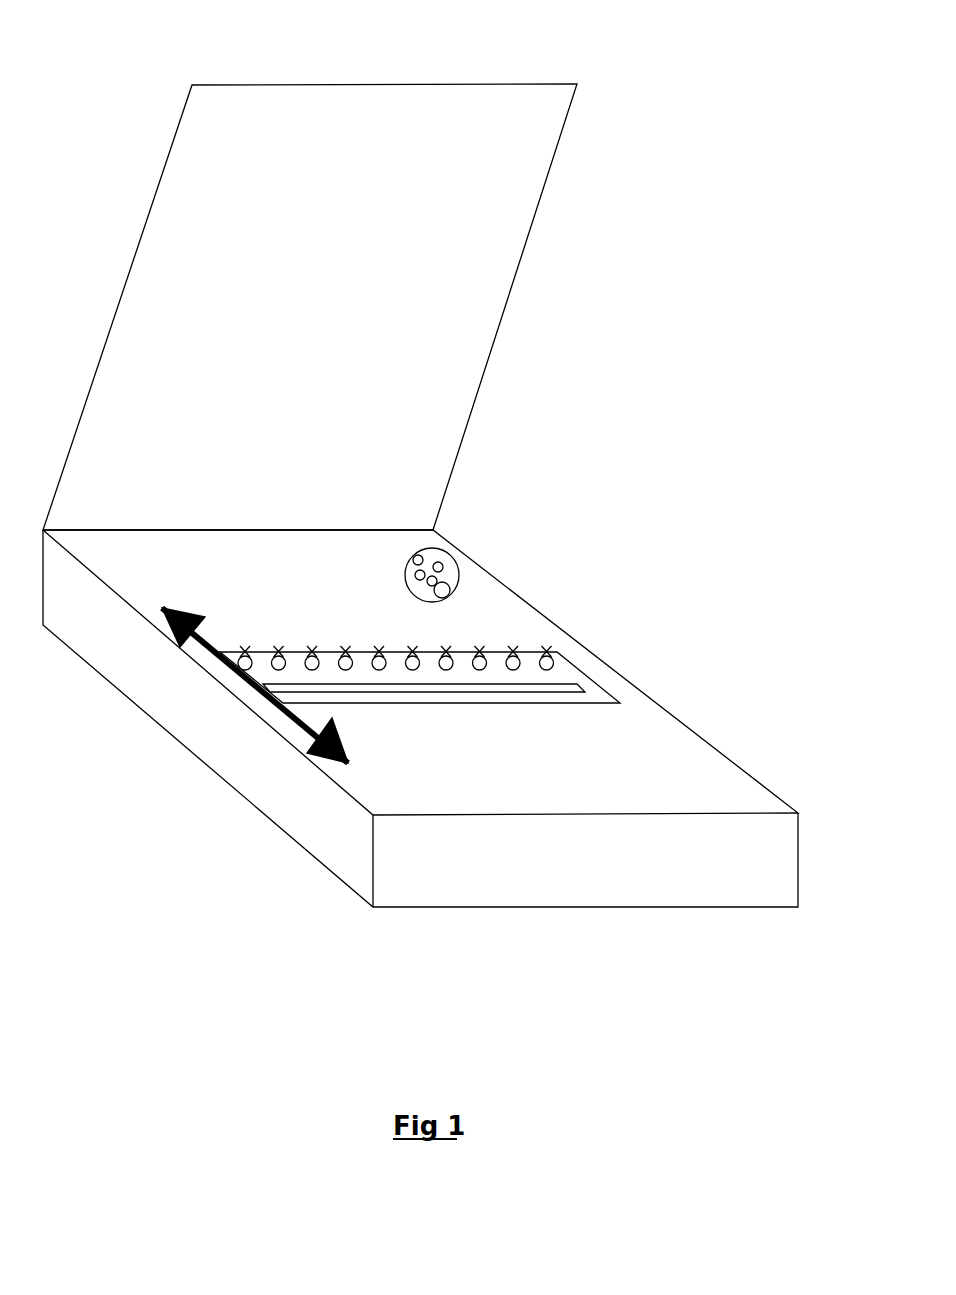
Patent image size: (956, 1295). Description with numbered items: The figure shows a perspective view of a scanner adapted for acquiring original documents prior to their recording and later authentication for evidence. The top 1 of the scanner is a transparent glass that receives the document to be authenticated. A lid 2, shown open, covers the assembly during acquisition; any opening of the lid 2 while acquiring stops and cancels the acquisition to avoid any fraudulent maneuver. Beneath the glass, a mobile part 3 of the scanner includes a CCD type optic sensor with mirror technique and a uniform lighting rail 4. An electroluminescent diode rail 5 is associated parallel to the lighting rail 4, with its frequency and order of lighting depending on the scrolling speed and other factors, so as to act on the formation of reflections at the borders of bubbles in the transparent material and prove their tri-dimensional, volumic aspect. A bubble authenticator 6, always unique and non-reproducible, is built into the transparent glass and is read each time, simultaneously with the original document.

The top 1 is at (678, 742).
The lid 2 is at (512, 172).
The mobile part 3 is at (595, 683).
The uniform lighting rail 4 is at (512, 690).
The electroluminescent diode rail 5 is at (498, 648).
The bubble authenticator 6 is at (447, 562).